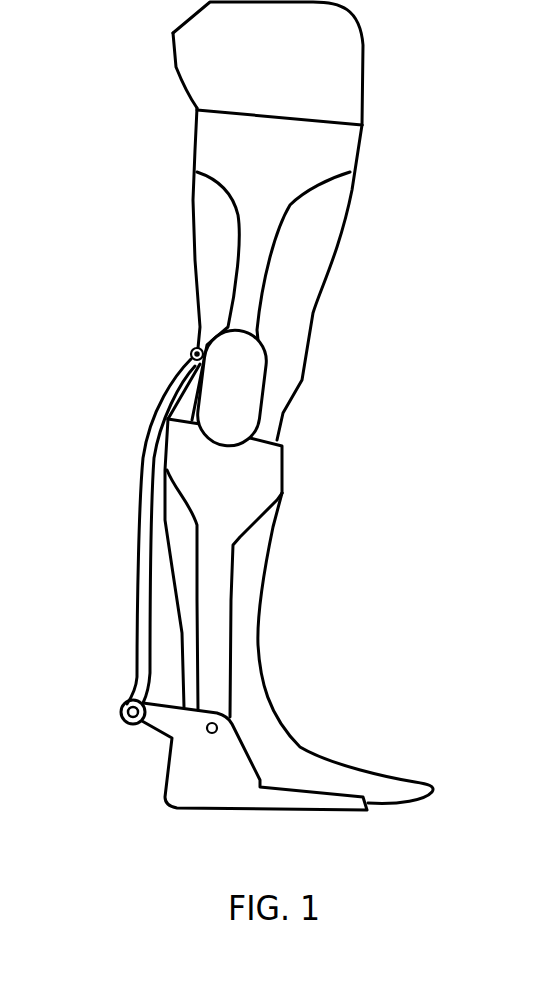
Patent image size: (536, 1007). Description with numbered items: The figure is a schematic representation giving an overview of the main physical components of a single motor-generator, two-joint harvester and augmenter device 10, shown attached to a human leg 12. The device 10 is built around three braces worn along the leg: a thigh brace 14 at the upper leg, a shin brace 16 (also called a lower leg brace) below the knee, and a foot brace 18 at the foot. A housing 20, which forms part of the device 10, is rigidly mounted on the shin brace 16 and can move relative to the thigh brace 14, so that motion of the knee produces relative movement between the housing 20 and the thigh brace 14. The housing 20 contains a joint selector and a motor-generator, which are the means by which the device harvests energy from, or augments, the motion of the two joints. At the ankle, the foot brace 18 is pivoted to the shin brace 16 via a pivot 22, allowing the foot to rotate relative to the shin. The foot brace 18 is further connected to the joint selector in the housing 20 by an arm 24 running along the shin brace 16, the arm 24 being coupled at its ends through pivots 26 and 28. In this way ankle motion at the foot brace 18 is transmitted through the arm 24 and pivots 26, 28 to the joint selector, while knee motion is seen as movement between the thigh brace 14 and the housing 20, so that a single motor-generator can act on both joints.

The single motor-generator, two-joint harvester and augmenter device 10 is at (237, 415).
The human leg 12 is at (193, 212).
The thigh brace 14 is at (363, 147).
The shin brace 16 is at (283, 477).
The foot brace 18 is at (157, 783).
The housing 20 is at (270, 367).
The pivot 22 is at (207, 737).
The arm 24 is at (153, 412).
The pivot 26 is at (125, 700).
The pivot 28 is at (193, 348).